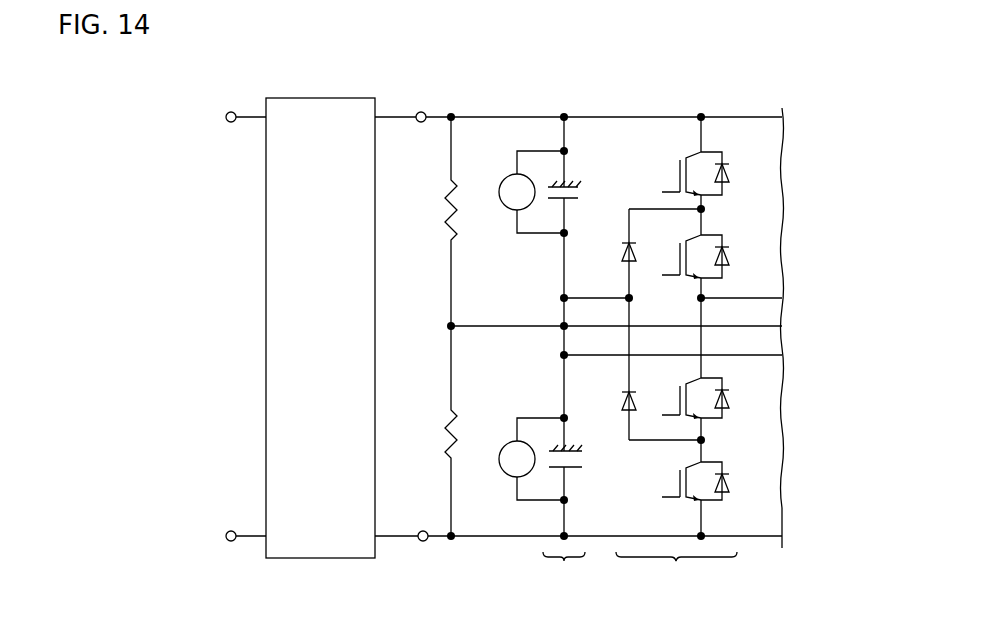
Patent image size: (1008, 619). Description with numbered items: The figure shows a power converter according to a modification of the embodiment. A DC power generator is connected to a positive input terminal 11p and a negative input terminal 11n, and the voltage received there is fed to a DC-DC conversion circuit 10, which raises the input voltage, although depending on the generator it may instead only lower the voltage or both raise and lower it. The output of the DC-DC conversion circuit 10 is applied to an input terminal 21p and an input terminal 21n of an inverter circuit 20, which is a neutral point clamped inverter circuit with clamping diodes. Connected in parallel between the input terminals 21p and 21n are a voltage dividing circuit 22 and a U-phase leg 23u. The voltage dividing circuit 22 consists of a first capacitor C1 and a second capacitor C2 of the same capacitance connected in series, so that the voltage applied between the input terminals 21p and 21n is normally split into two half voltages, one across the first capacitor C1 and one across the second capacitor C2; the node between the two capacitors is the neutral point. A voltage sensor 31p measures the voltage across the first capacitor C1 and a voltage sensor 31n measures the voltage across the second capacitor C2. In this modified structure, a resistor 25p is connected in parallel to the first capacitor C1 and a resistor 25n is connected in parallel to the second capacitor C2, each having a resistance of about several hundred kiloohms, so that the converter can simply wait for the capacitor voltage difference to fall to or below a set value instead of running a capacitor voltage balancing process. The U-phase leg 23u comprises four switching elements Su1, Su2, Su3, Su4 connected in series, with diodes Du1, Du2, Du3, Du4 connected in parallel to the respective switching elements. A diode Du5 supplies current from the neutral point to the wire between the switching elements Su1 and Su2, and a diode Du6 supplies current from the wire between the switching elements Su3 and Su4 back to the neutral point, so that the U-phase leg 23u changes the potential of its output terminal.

The DC-DC conversion circuit 10 is at (330, 97).
The input terminal 11p is at (233, 111).
The input terminal 11n is at (231, 530).
The input terminal 21p is at (421, 111).
The input terminal 21n is at (425, 552).
The inverter circuit 20 is at (782, 75).
The resistor 25p is at (447, 232).
The resistor 25n is at (447, 456).
The voltage sensor 31p is at (508, 207).
The voltage sensor 31n is at (510, 472).
The first capacitor C1 is at (575, 187).
The second capacitor C2 is at (580, 459).
The voltage dividing circuit 22 is at (564, 355).
The U-phase leg 23u is at (676, 573).
The switching element Su1 is at (678, 165).
The switching element Su2 is at (678, 254).
The switching element Su3 is at (678, 401).
The switching element Su4 is at (678, 486).
The diode Du1 is at (729, 172).
The diode Du2 is at (729, 255).
The diode Du3 is at (729, 399).
The diode Du4 is at (729, 484).
The diode Du5 is at (621, 252).
The diode Du6 is at (621, 399).